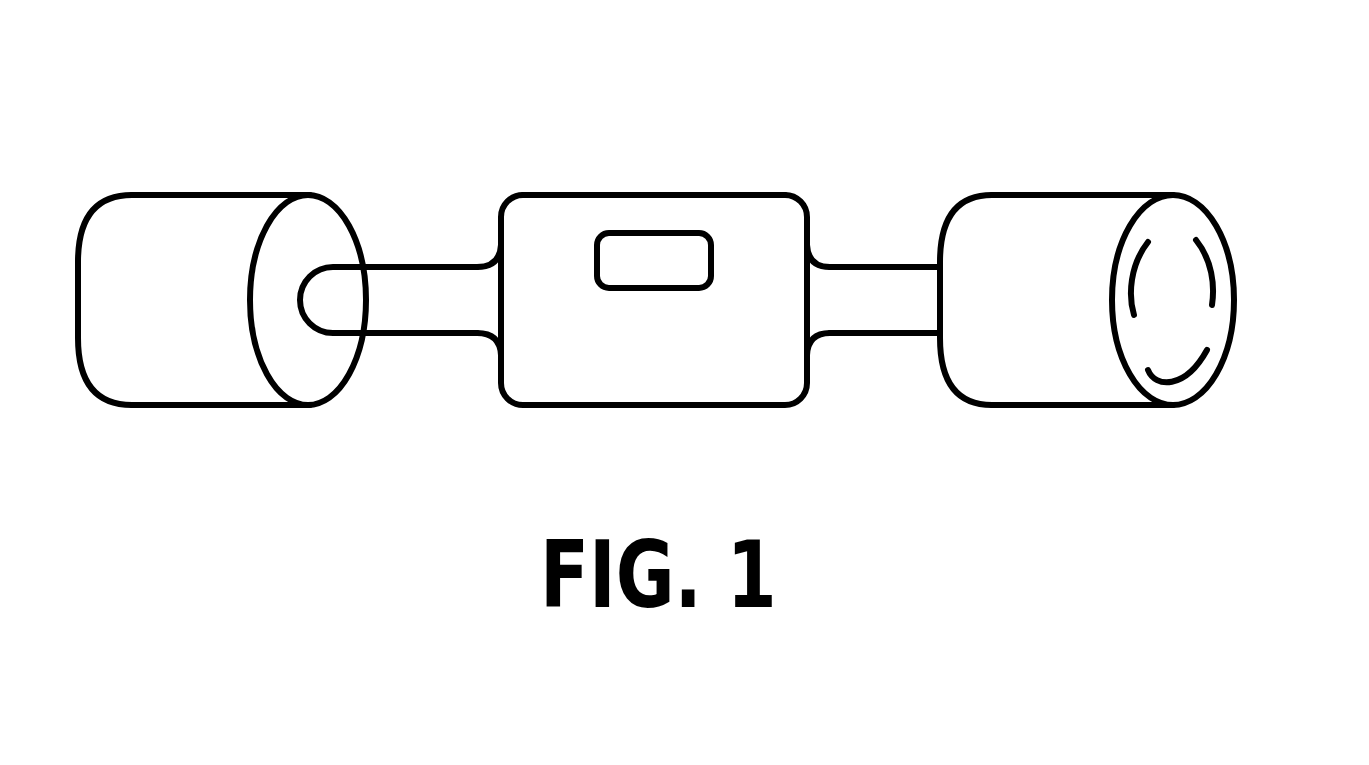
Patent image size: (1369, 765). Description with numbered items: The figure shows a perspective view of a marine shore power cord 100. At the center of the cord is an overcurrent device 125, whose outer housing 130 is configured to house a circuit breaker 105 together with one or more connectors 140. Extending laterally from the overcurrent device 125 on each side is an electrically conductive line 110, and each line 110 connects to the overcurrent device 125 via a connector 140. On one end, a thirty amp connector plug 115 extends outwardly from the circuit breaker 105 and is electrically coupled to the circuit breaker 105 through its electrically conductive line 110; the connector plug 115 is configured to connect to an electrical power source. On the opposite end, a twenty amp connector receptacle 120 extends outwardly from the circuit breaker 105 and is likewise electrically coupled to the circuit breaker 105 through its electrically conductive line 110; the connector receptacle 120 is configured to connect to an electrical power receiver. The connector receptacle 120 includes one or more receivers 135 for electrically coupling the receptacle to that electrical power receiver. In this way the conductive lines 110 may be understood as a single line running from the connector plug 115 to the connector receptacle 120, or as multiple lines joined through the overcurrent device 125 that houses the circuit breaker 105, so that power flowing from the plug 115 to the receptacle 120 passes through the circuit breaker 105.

The marine shore power cord 100 is at (684, 46).
The circuit breaker 105 is at (662, 253).
The electrically conductive line 110 is at (440, 263).
The 30 amp connector plug 115 is at (215, 408).
The 20 amp connector receptacle 120 is at (1057, 407).
The overcurrent device 125 is at (783, 185).
The outer housing 130 is at (591, 194).
The receivers 135 is at (1205, 280).
The connectors 140 is at (496, 340).